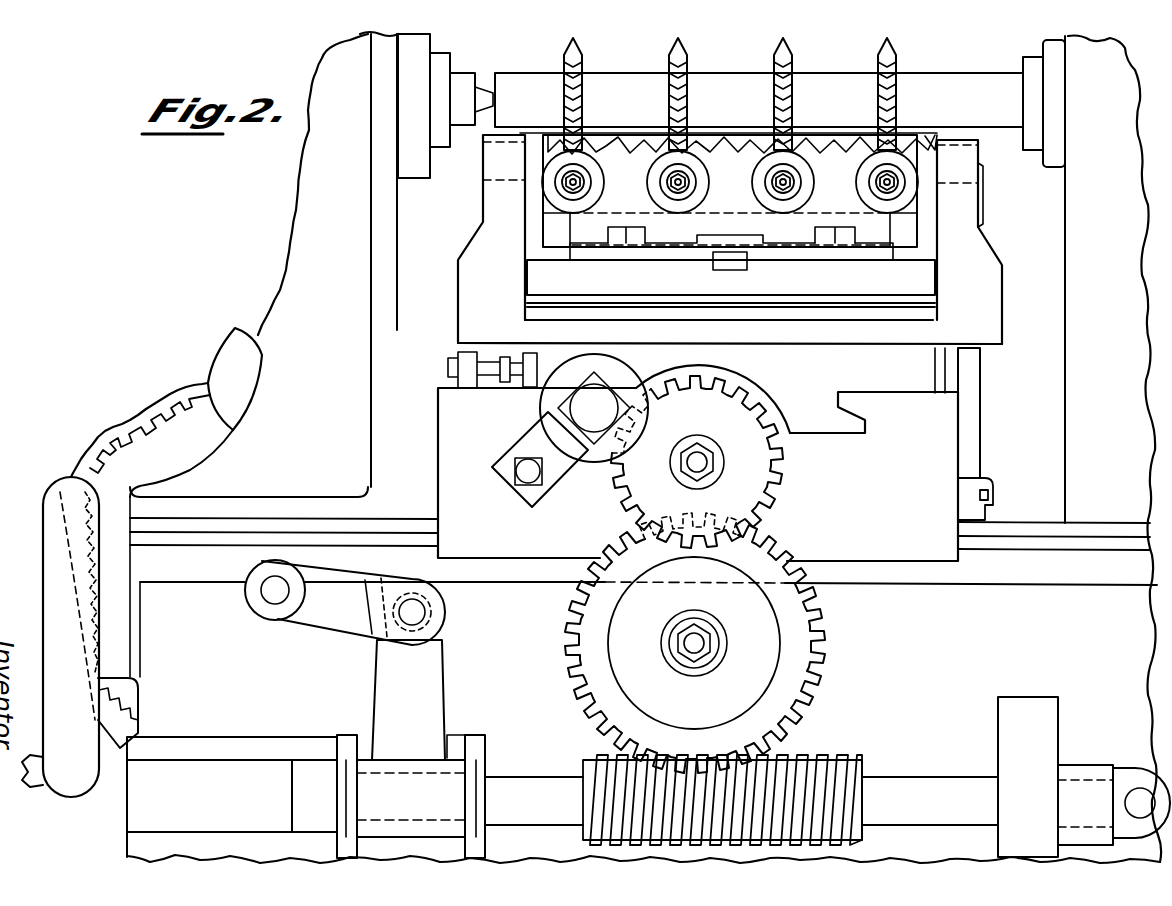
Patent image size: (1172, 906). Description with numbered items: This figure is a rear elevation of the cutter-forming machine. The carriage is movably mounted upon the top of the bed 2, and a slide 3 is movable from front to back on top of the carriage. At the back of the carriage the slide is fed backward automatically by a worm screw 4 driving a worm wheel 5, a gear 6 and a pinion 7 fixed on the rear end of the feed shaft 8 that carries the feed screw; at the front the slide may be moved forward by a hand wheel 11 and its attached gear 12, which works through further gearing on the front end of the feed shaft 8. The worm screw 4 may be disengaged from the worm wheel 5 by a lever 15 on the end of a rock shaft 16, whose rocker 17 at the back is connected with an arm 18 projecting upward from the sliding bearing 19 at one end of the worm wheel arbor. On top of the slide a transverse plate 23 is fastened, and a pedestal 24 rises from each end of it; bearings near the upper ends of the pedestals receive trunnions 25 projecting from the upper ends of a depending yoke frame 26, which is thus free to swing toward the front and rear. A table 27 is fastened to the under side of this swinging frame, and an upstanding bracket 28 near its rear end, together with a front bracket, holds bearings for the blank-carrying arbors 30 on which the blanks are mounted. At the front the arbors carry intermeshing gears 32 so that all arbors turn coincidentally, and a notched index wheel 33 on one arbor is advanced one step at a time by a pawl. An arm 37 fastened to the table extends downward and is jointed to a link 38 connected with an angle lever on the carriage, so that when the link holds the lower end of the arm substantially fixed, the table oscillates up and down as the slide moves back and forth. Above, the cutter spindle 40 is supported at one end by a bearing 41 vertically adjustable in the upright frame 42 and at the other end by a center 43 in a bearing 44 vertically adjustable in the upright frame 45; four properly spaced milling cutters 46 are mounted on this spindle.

The bed 2 is at (648, 690).
The slide 3 is at (698, 454).
The worm screw 4 is at (862, 773).
The worm wheel 5 is at (805, 691).
The gear 6 is at (694, 643).
The pinion 7 is at (697, 462).
The feed shaft 8 is at (708, 462).
The hand wheel 11 is at (130, 424).
The gear 12 is at (152, 440).
The lever 15 is at (235, 379).
The rock shaft 16 is at (268, 597).
The rocker 17 is at (353, 603).
The arm 18 is at (408, 700).
The sliding bearing 19 is at (411, 796).
The plate 23 is at (730, 333).
The pedestal 24 is at (730, 239).
The trunnions 25 is at (498, 183).
The yoke frame 26 is at (727, 227).
The table 27 is at (731, 267).
The bracket 28 is at (730, 191).
The blank-carrying arbors 30 is at (664, 178).
The gears 32 is at (638, 136).
The notched index wheel 33 is at (928, 140).
The arm 37 is at (988, 444).
The link 38 is at (958, 505).
The cutter spindle 40 is at (972, 86).
The bearing 41 is at (1044, 103).
The upright frame 42 is at (1113, 449).
The center 43 is at (484, 84).
The bearing 44 is at (424, 106).
The upright frame 45 is at (264, 354).
The milling cutters 46 is at (660, 58).